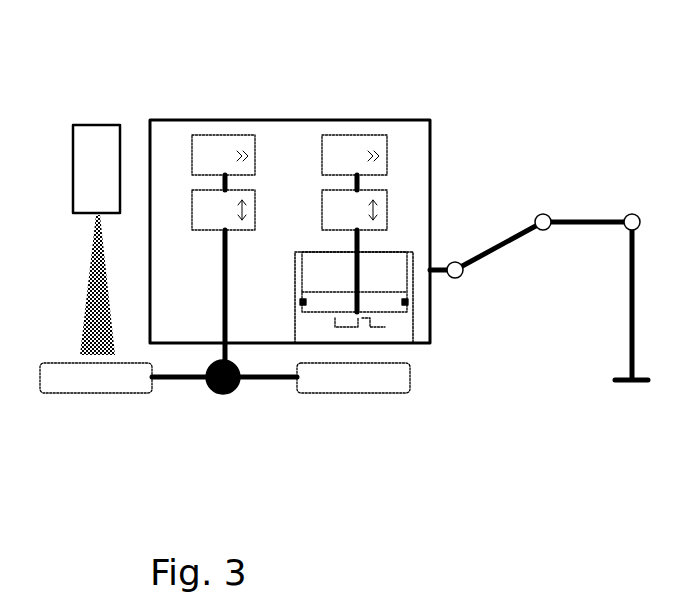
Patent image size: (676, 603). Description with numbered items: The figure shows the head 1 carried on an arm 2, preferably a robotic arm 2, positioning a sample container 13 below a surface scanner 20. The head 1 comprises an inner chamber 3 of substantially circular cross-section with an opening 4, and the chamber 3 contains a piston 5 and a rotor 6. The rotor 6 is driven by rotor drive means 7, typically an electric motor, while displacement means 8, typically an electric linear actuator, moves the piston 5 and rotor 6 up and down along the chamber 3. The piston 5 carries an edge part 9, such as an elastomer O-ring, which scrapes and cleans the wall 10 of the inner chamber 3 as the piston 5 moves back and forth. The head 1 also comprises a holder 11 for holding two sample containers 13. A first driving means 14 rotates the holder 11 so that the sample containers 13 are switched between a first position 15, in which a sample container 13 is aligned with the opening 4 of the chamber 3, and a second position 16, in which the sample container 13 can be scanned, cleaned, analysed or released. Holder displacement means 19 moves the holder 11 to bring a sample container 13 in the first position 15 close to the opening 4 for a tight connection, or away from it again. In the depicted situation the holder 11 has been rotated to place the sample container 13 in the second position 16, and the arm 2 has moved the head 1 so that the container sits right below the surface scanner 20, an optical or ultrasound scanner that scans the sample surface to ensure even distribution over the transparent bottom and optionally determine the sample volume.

The head 1 is at (420, 131).
The arm 2 is at (608, 190).
The inner chamber 3 is at (388, 264).
The opening 4 is at (410, 345).
The piston 5 is at (385, 302).
The rotor 6 is at (393, 343).
The rotor drive means 7 is at (358, 145).
The displacement means 8 is at (320, 206).
The edge part 9 is at (408, 301).
The wall 10 is at (387, 323).
The holder 11 is at (226, 404).
The sample container 13 is at (66, 384).
The first driving means 14 is at (222, 145).
The first position 15 is at (407, 414).
The second position 16 is at (103, 417).
The holder displacement means 19 is at (195, 205).
The surface scanner 20 is at (92, 132).